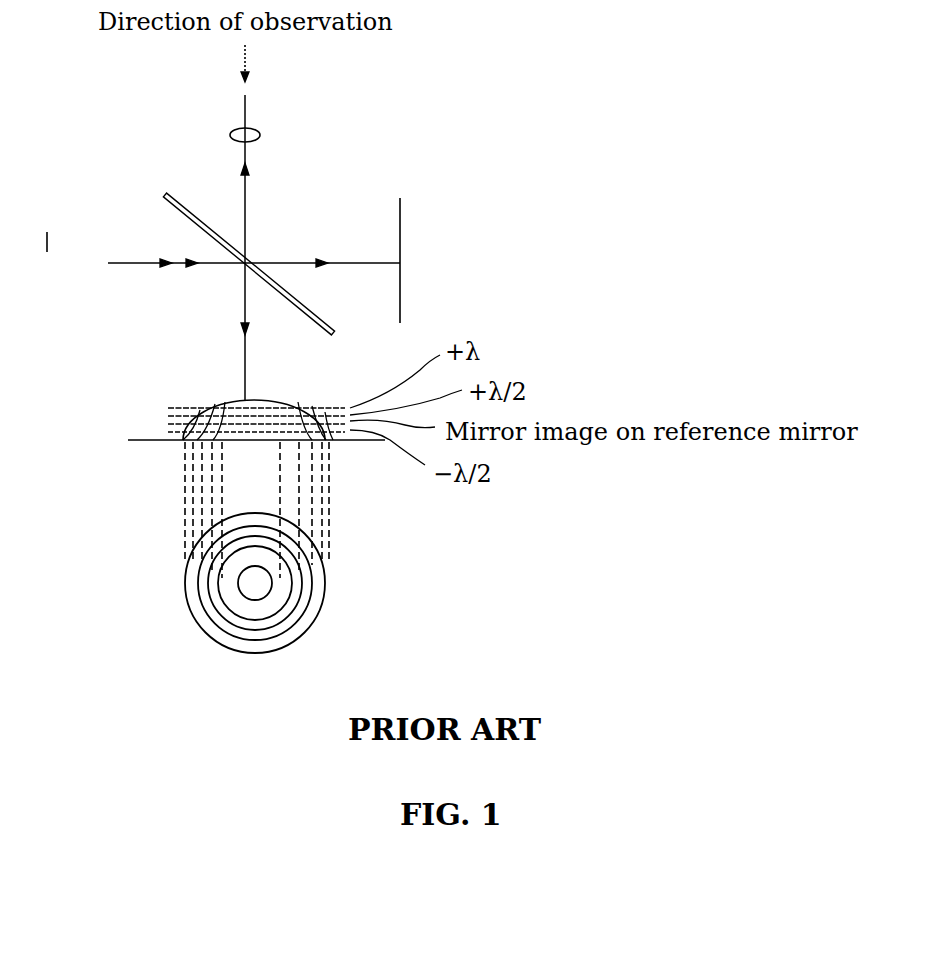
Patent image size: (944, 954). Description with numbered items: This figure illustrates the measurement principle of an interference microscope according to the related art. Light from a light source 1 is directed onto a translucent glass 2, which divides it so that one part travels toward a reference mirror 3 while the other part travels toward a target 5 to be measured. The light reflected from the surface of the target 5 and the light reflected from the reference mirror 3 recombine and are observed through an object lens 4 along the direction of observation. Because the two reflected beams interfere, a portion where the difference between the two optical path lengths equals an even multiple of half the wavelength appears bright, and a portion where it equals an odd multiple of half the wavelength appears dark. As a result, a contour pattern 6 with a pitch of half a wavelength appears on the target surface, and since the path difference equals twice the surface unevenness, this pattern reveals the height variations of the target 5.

The light source 1 is at (108, 263).
The translucent glass 2 is at (164, 197).
The reference mirror 3 is at (400, 198).
The object lens 4 is at (232, 139).
The target 5 is at (240, 398).
The contour pattern 6 is at (328, 593).